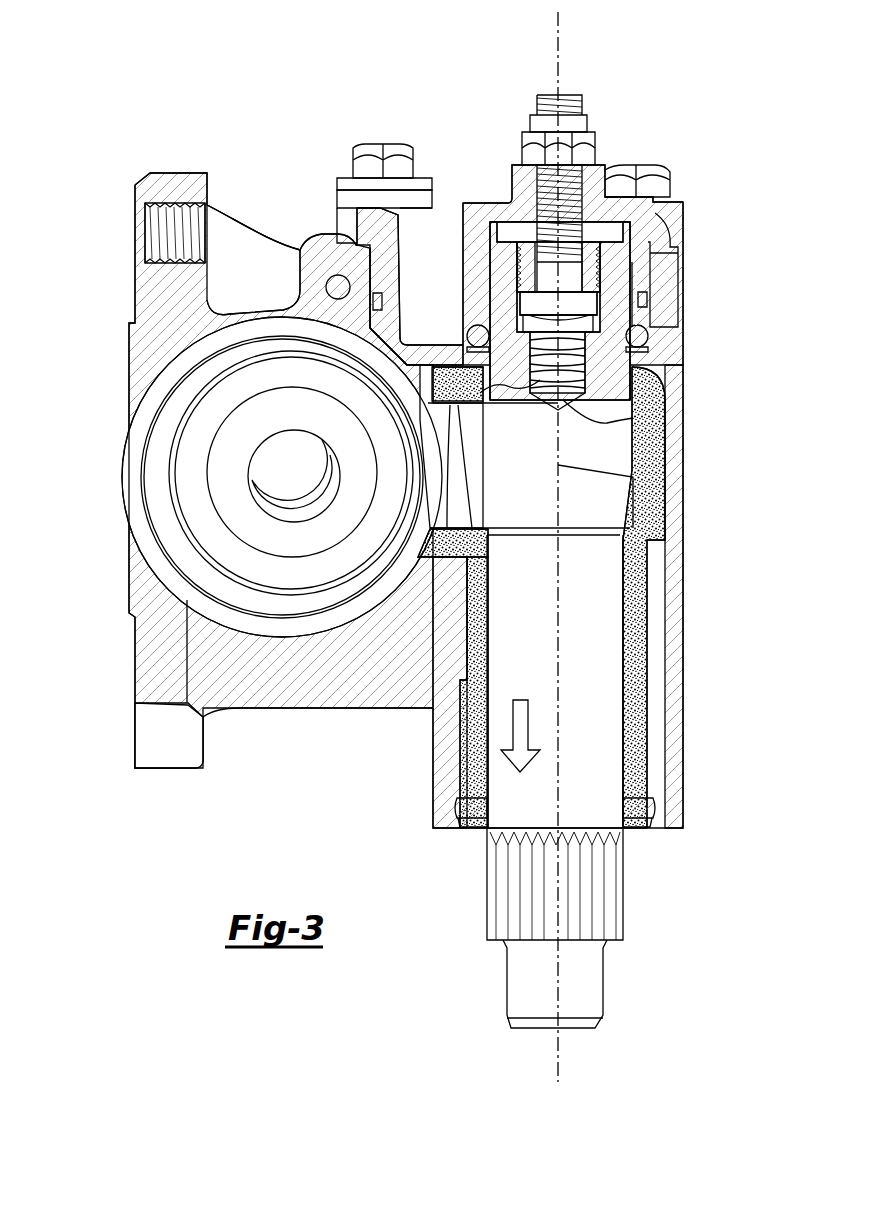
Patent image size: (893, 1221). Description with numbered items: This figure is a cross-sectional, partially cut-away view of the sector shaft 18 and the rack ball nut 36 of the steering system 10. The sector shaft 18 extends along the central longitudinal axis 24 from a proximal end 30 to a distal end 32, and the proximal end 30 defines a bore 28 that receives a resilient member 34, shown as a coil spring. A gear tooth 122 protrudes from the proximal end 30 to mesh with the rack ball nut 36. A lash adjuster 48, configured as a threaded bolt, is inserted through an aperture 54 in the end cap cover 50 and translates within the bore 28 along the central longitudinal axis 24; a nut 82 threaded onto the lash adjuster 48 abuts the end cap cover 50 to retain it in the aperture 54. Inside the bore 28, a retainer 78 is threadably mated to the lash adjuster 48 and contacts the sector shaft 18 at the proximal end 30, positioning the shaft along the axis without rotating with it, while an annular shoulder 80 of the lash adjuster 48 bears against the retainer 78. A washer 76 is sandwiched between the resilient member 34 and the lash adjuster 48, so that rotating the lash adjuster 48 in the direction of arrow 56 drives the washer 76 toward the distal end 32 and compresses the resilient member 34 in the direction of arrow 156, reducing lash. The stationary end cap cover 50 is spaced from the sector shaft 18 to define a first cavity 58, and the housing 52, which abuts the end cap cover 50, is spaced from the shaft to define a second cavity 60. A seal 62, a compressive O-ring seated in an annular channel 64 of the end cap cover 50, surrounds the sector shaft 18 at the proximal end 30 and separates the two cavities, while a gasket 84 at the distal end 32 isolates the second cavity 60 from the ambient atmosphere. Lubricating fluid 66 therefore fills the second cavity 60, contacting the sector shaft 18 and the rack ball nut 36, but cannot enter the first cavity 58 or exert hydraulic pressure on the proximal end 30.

The steering system 10 is at (75, 215).
The sector shaft 18 is at (595, 768).
The central longitudinal axis 24 is at (560, 1068).
The bore 28 is at (600, 307).
The proximal end 30 is at (636, 268).
The distal end 32 is at (607, 1012).
The resilient member 34 is at (532, 387).
The rack ball nut 36 is at (155, 497).
The lash adjuster 48 is at (575, 222).
The end cap cover 50 is at (470, 207).
The housing 52 is at (675, 462).
The aperture 54 is at (538, 160).
The arrow 56 is at (587, 112).
The first cavity 58 is at (622, 220).
The second cavity 60 is at (647, 462).
The seal 62 is at (645, 345).
The annular channel 64 is at (465, 322).
The fluid 66 is at (652, 430).
The washer 76 is at (528, 325).
The retainer 78 is at (522, 262).
The annular shoulder 80 is at (533, 305).
The nut 82 is at (590, 155).
The gasket 84 is at (650, 812).
The gear tooth 122 is at (447, 557).
The arrow 156 is at (520, 700).